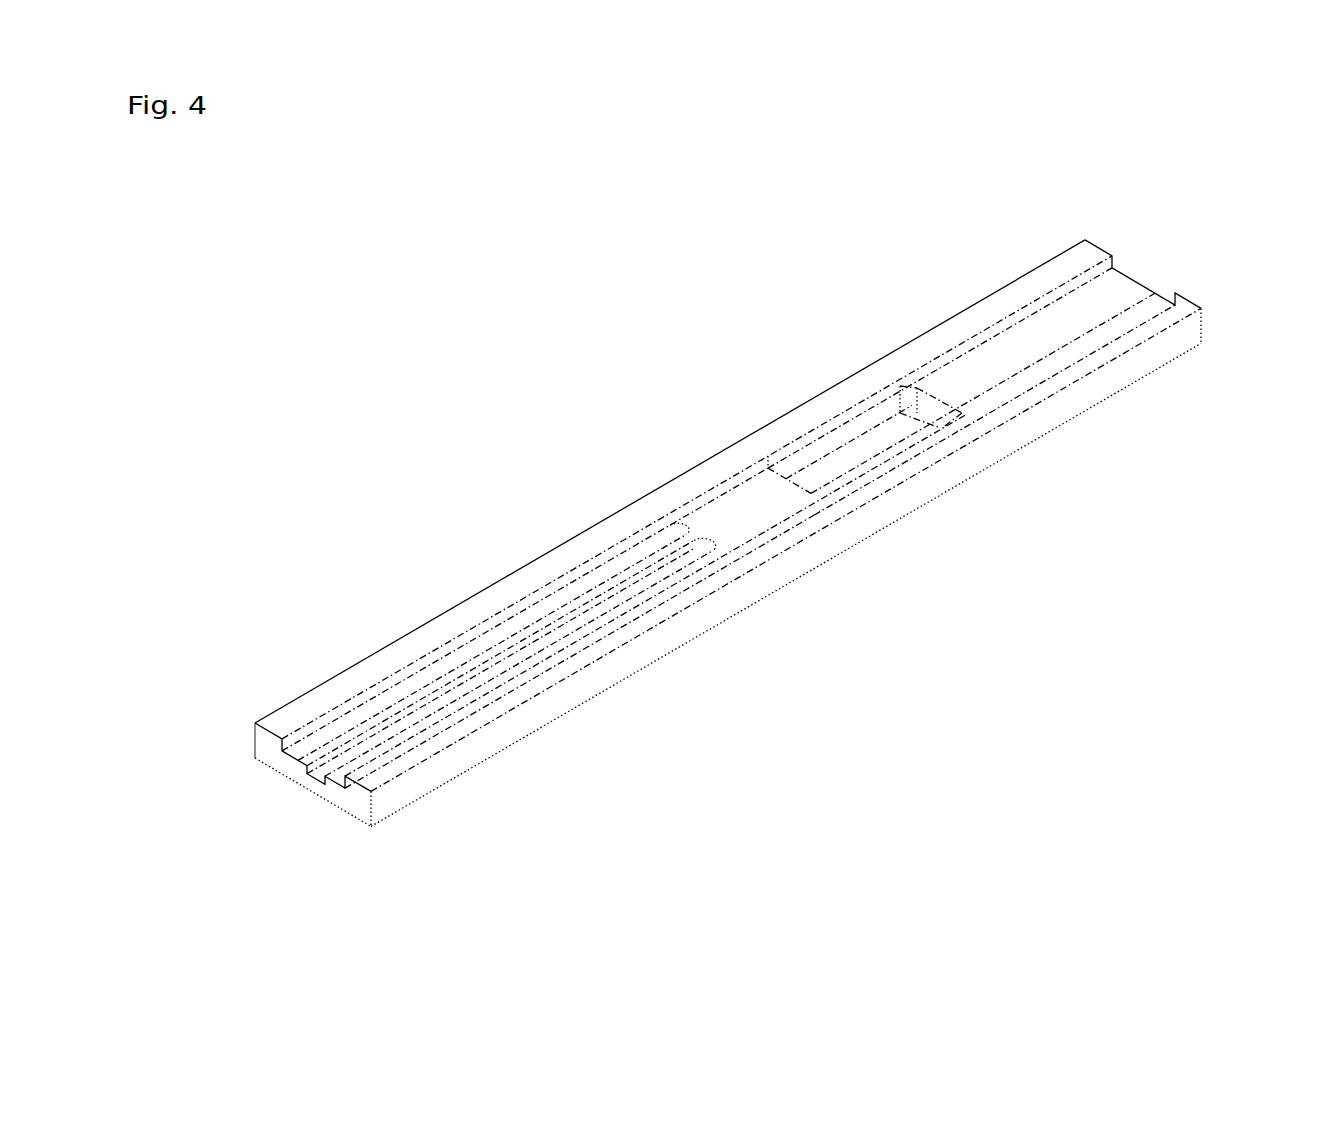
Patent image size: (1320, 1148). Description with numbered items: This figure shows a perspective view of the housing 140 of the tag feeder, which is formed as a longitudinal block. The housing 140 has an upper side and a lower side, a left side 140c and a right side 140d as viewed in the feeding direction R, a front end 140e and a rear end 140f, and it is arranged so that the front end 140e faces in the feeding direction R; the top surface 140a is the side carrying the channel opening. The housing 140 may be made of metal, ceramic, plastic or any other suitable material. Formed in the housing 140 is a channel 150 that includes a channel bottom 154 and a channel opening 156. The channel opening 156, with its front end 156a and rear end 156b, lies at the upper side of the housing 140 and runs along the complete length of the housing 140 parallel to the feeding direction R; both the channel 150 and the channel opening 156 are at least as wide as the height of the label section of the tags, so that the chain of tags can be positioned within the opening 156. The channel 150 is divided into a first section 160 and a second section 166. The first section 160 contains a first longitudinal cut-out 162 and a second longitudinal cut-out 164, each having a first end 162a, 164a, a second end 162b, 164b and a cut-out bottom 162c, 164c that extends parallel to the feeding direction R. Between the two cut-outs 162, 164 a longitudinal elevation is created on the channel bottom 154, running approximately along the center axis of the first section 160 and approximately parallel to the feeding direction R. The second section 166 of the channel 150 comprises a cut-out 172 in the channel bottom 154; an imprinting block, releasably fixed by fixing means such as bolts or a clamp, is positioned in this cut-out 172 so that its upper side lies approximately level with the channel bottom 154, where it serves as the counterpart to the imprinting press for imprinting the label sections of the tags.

The housing 140 is at (557, 545).
The top surface 140a is at (631, 508).
The left side 140c is at (655, 640).
The right side 140d is at (812, 391).
The front end 140e is at (258, 720).
The rear end 140f is at (1103, 240).
The channel 150 is at (717, 515).
The channel bottom 154 is at (959, 385).
The channel opening 156 is at (775, 505).
The front end 156a is at (363, 756).
The rear end 156b is at (1093, 303).
The first section 160 is at (455, 640).
The first longitudinal cut-out 162 is at (333, 775).
The first end 162a is at (325, 768).
The second end 162b is at (693, 570).
The cut-out bottom 162c is at (545, 650).
The second longitudinal cut-out 164 is at (298, 755).
The first end 164a is at (310, 743).
The second end 164b is at (663, 536).
The cut-out bottom 164c is at (398, 690).
The second section 166 is at (980, 358).
The cut-out 172 is at (860, 455).
The feeding direction R is at (403, 712).